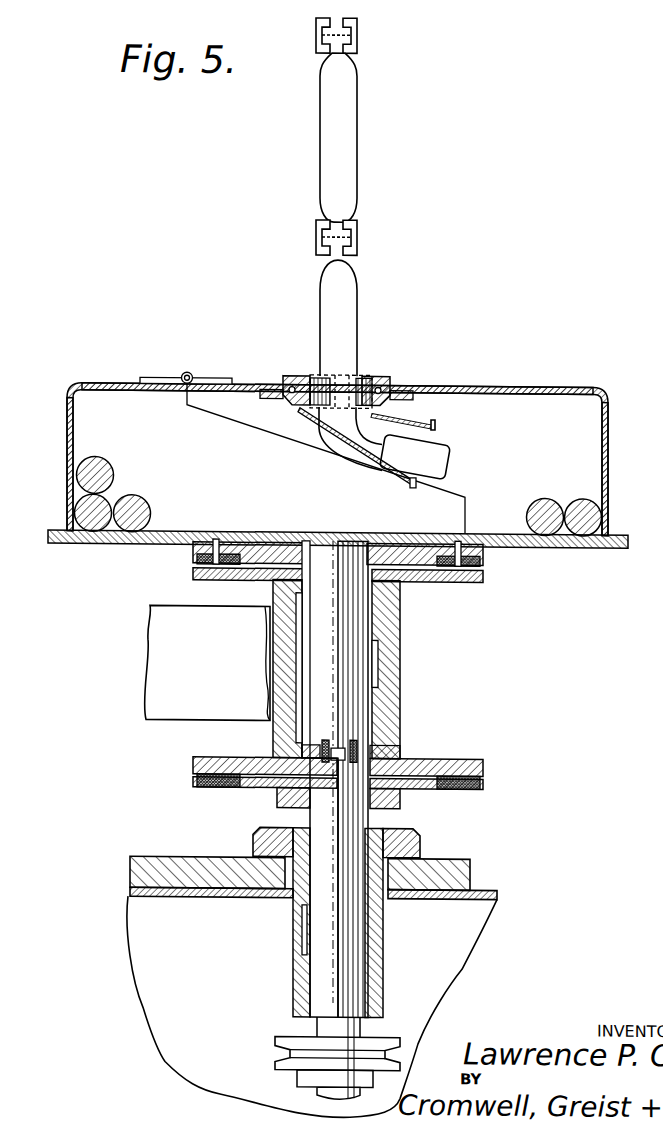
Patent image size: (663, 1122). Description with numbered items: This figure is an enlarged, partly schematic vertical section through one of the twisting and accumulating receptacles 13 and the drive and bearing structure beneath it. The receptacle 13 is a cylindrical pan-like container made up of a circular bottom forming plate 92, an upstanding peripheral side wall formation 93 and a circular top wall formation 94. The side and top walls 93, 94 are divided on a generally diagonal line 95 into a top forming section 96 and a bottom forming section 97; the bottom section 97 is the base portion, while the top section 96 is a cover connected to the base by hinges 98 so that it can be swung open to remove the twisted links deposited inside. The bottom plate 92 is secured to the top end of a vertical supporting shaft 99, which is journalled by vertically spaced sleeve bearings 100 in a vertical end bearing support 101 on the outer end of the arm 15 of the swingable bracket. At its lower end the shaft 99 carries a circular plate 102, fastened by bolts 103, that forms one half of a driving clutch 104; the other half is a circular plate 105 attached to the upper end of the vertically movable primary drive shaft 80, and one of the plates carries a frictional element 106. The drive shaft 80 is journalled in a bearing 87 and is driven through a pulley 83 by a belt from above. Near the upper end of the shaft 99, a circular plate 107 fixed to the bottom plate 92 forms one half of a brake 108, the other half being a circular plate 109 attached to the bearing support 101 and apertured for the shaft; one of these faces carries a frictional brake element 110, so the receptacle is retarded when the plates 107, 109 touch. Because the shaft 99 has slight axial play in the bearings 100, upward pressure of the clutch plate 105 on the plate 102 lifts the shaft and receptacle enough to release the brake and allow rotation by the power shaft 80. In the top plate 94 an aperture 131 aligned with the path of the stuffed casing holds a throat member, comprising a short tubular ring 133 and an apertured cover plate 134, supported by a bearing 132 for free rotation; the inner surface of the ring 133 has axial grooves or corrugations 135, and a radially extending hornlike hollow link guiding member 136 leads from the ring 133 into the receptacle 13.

The twisting and accumulating receptacle 13 is at (611, 384).
The arm 15 is at (158, 664).
The primary drive shaft 80 is at (345, 959).
The pulley 83 is at (385, 1038).
The bearing 87 is at (297, 931).
The bottom forming plate 92 is at (575, 543).
The peripheral side wall formation 93 is at (609, 468).
The top wall formation 94 is at (472, 382).
The dividing line 95 is at (243, 424).
The top forming section 96 is at (505, 405).
The bottom forming section 97 is at (92, 437).
The hinge 98 is at (187, 370).
The vertical supporting shaft 99 is at (362, 623).
The sleeve bearing 100 is at (305, 699).
The end bearing support 101 is at (380, 657).
The clutch plate 102 is at (450, 755).
The bolt 103 is at (352, 747).
The driving clutch 104 is at (484, 777).
The clutch plate 105 is at (445, 786).
The frictional element 106 is at (470, 787).
The brake plate 107 is at (412, 541).
The brake 108 is at (477, 578).
The brake plate 109 is at (445, 580).
The frictional brake element 110 is at (193, 567).
The aperture 131 is at (300, 375).
The bearing 132 is at (288, 383).
The ring 133 is at (385, 377).
The apertured cover plate 134 is at (400, 381).
The grooves or corrugations 135 is at (360, 381).
The link guiding member 136 is at (346, 463).